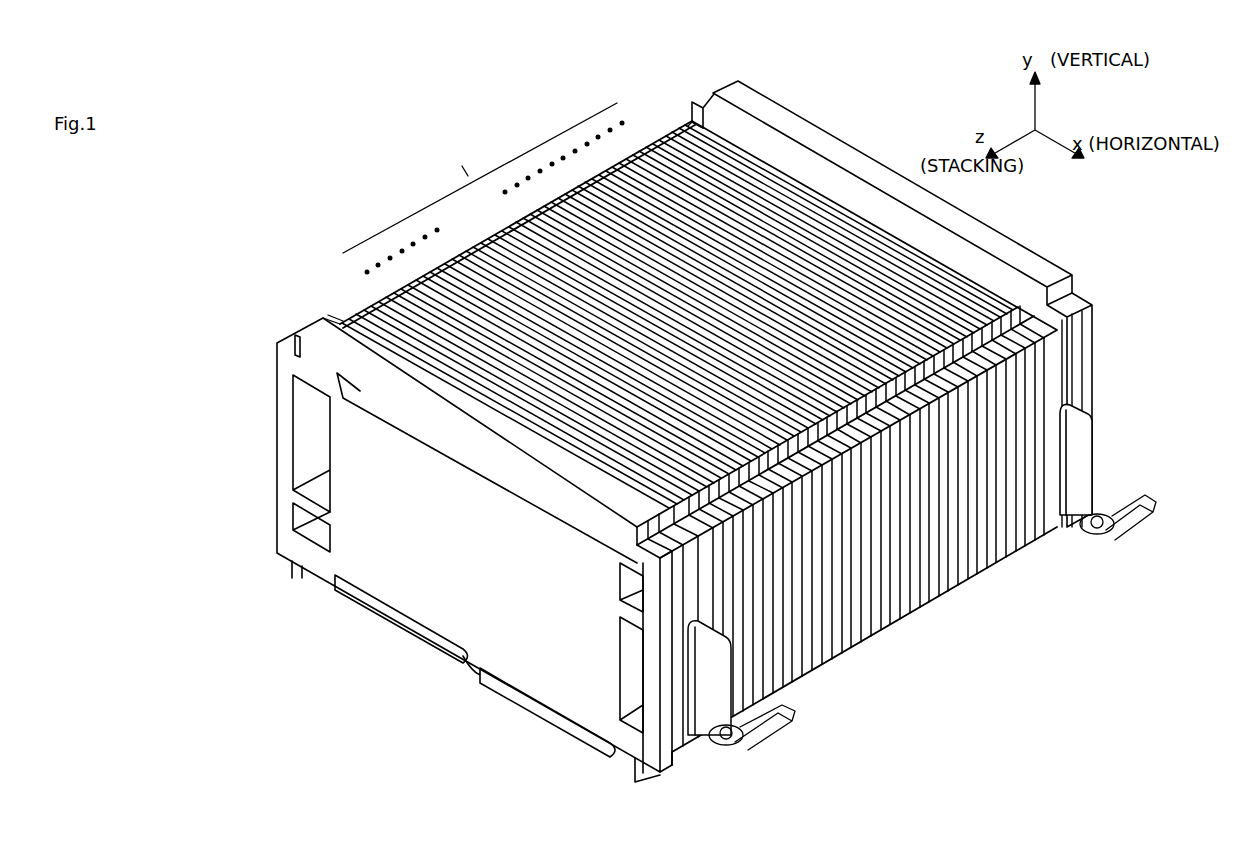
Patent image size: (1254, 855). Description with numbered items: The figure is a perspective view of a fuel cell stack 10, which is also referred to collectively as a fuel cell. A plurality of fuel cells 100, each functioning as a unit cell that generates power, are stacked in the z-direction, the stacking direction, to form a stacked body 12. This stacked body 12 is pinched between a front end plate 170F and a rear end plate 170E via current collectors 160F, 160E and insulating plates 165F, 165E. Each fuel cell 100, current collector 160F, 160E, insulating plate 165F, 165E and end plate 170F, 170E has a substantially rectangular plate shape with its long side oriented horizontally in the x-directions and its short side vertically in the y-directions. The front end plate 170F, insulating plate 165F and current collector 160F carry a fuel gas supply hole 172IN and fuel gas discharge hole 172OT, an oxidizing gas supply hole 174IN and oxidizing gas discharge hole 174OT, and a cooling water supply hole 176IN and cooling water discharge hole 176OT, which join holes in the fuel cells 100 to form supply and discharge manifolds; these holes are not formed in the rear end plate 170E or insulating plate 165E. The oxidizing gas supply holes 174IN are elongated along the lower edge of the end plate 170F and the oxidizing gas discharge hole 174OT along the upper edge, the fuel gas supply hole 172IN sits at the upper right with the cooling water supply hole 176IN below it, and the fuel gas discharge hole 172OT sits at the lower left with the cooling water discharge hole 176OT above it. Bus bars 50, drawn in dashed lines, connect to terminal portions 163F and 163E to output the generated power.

The fuel cell stack 10 is at (277, 90).
The stacked body 12 is at (484, 189).
The fuel cell 100 is at (527, 232).
The current collector 160E is at (688, 125).
The current collector 160F is at (336, 320).
The insulating plate 165E is at (712, 92).
The insulating plate 165F is at (315, 322).
The end plate 170E is at (900, 283).
The end plate 170F is at (520, 540).
The cooling water discharge hole 176OT is at (307, 433).
The fuel gas discharge hole 172OT is at (305, 517).
The oxidizing gas discharge hole 174OT is at (470, 463).
The oxidizing gas supply hole 174IN is at (553, 702).
The cooling water supply hole 176IN is at (683, 767).
The fuel gas supply hole 172IN is at (627, 588).
The terminal portion 163E is at (1083, 455).
The terminal portion 163F is at (715, 697).
The bus bar 50 is at (762, 742).